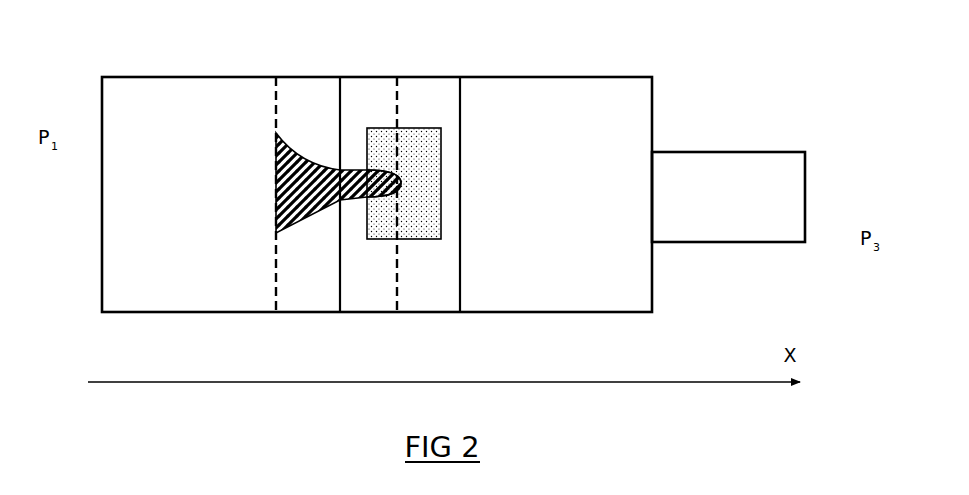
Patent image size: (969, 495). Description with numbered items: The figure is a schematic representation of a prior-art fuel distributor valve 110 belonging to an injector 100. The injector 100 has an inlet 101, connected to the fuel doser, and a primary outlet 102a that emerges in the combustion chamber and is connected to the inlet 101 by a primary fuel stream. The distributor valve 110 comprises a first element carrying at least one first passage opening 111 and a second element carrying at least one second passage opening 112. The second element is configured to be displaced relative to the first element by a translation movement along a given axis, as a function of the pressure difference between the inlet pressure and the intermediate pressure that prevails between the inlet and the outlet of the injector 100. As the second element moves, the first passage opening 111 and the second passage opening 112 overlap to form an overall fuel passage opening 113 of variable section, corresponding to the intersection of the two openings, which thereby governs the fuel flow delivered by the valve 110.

The injector 100 is at (458, 171).
The inlet 101 is at (100, 274).
The primary outlet 102a is at (806, 185).
The distributor valve 110 is at (462, 71).
The first passage opening 111 is at (428, 247).
The second passage opening 112 is at (330, 204).
The overall fuel passage opening 113 is at (380, 192).